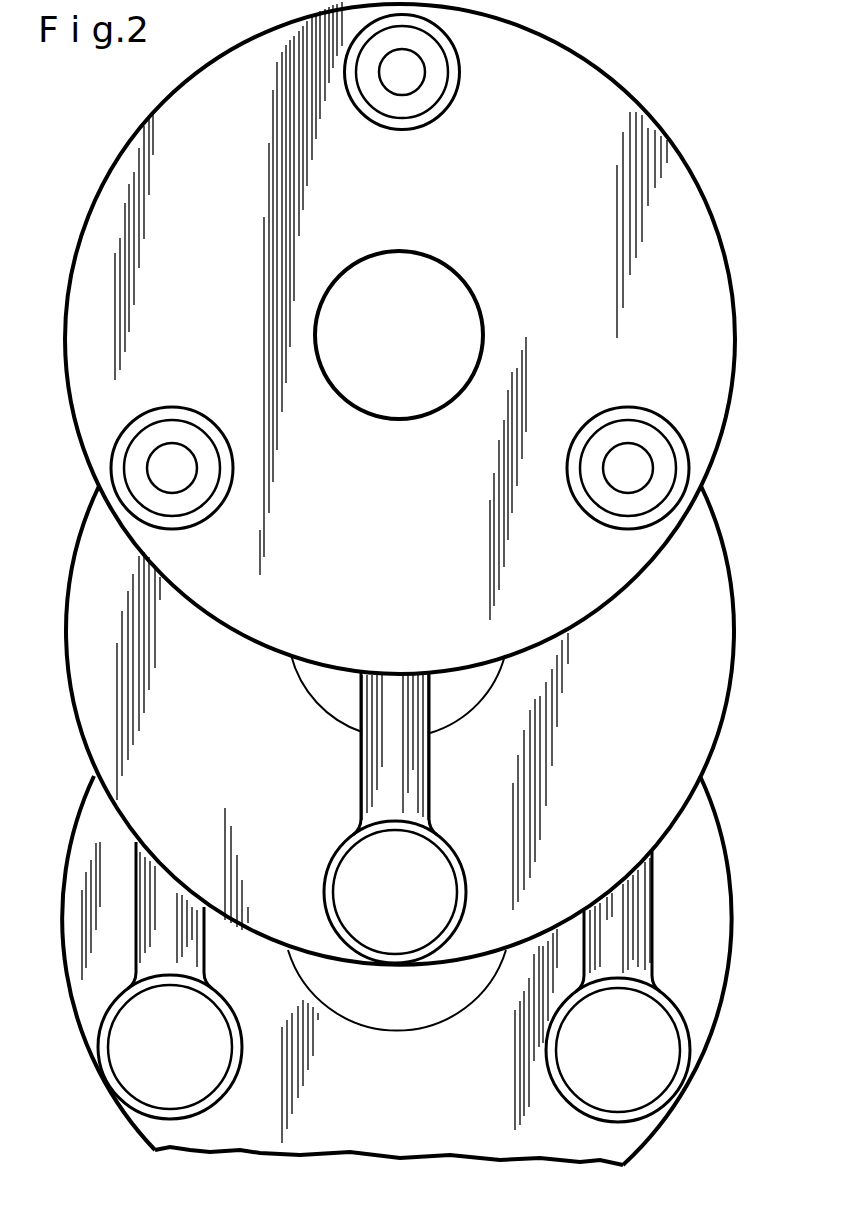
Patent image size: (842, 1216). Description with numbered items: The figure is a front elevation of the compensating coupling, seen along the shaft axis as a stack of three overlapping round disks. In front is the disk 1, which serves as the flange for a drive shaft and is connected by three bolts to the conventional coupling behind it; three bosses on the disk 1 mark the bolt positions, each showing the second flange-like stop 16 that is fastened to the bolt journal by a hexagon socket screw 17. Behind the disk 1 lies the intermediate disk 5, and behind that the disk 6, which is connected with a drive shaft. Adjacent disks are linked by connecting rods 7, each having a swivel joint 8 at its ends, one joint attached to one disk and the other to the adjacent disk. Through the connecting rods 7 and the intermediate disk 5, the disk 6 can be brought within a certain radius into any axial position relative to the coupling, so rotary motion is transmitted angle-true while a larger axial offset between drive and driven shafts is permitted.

The disk 1 is at (627, 165).
The intermediate disk 5 is at (672, 742).
The disk 6 is at (700, 997).
The connecting rod 7 is at (152, 927).
The swivel joint 8 is at (137, 1035).
The second flange-like stop 16 is at (425, 93).
The hexagon socket screw 17 is at (410, 66).